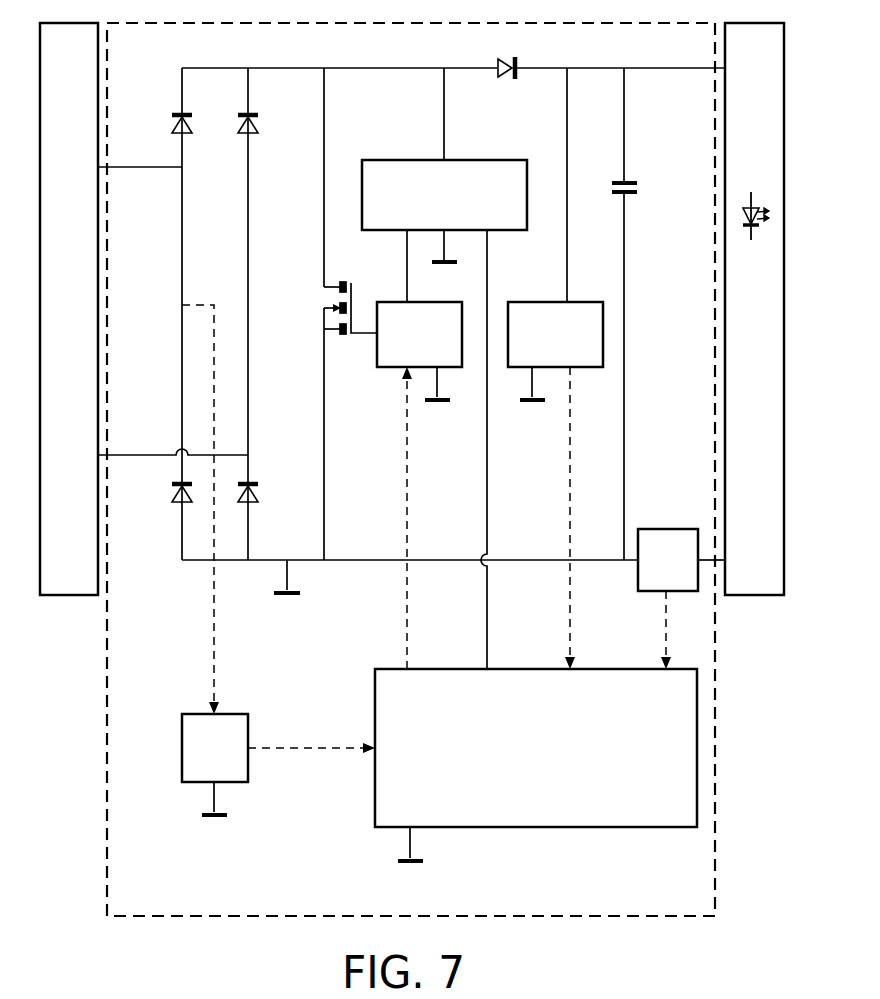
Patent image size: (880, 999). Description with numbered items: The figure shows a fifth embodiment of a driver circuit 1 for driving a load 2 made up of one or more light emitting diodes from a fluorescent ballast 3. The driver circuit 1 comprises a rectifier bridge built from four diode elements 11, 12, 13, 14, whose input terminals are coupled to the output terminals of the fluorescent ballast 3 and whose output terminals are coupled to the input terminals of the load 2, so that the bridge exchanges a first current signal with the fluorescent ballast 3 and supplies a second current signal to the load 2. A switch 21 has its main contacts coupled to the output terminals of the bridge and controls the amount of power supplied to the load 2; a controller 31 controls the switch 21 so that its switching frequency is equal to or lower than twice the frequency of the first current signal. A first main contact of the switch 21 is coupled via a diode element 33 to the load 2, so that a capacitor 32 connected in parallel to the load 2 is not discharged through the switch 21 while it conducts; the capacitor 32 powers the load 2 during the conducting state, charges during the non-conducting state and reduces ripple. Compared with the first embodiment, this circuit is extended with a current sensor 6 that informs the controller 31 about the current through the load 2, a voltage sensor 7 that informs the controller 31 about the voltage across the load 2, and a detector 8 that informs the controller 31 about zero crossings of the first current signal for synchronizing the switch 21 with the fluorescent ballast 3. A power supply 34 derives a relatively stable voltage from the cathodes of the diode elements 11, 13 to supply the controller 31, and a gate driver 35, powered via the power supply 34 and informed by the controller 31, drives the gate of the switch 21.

The driver circuit 1 is at (131, 53).
The load 2 is at (761, 53).
The fluorescent ballast 3 is at (77, 53).
The current sensor 6 is at (675, 574).
The voltage sensor 7 is at (564, 346).
The detector 8 is at (222, 761).
The diode element 11 is at (171, 126).
The diode element 12 is at (171, 495).
The diode element 13 is at (259, 126).
The diode element 14 is at (259, 495).
The switch 21 is at (328, 302).
The controller 31 is at (542, 761).
The capacitor 32 is at (616, 196).
The diode element 33 is at (504, 78).
The power supply 34 is at (459, 206).
The gate driver 35 is at (434, 346).